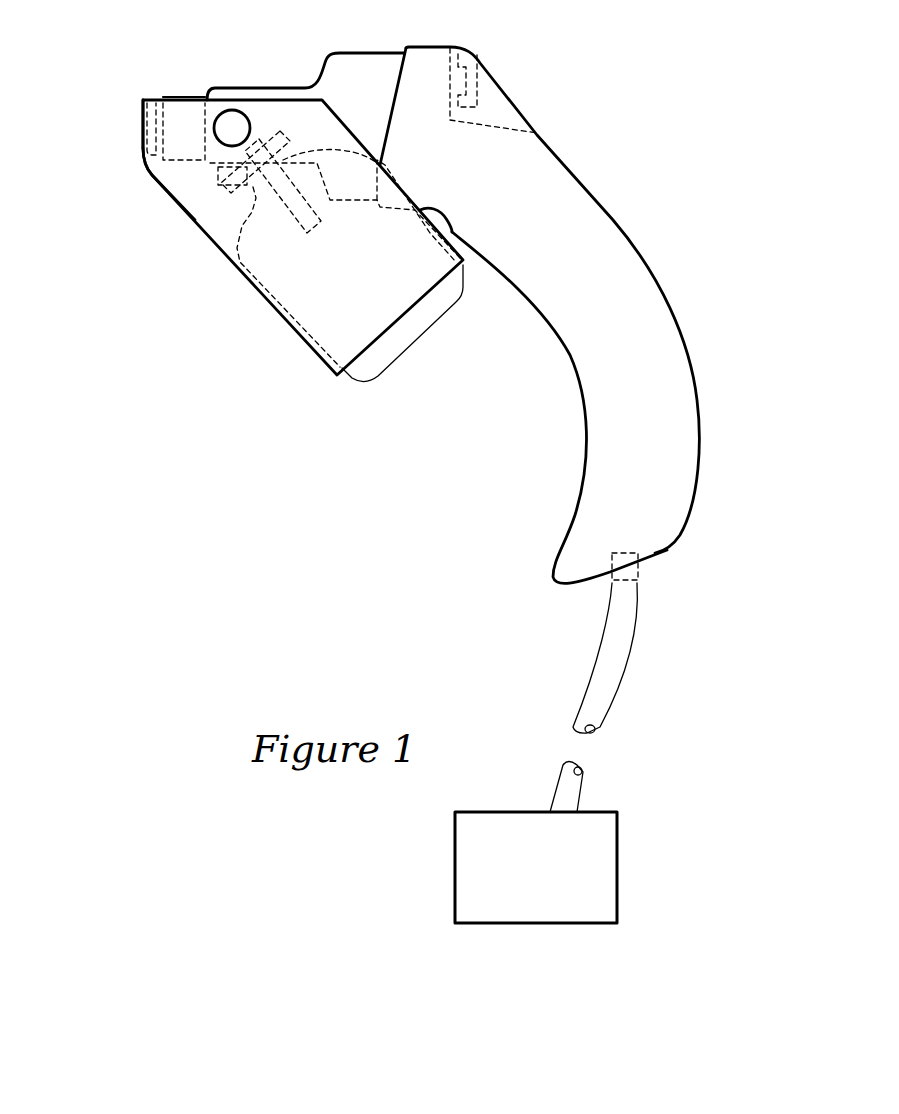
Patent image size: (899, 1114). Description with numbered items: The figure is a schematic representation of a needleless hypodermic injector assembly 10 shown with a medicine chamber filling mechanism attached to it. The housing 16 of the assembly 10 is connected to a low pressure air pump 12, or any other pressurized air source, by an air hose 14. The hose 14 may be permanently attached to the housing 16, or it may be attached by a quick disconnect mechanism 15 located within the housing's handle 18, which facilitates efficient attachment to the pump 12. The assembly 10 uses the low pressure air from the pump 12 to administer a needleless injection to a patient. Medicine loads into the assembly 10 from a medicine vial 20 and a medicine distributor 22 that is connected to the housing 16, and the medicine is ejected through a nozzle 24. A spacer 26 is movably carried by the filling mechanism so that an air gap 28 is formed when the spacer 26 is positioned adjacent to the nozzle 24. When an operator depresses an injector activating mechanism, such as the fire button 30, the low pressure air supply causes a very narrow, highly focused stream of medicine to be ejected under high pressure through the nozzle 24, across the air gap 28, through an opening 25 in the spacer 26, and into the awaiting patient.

The needleless hypodermic injector assembly 10 is at (409, 34).
The low pressure air pump 12 is at (598, 848).
The air hose 14 is at (607, 678).
The quick disconnect mechanism 15 is at (670, 548).
The housing 16 is at (386, 72).
The handle 18 is at (638, 275).
The medicine vial 20 is at (372, 368).
The medicine distributor 22 is at (232, 118).
The nozzle 24 is at (184, 110).
The opening 25 is at (143, 127).
The spacer 26 is at (143, 103).
The air gap 28 is at (153, 158).
The fire button 30 is at (470, 78).